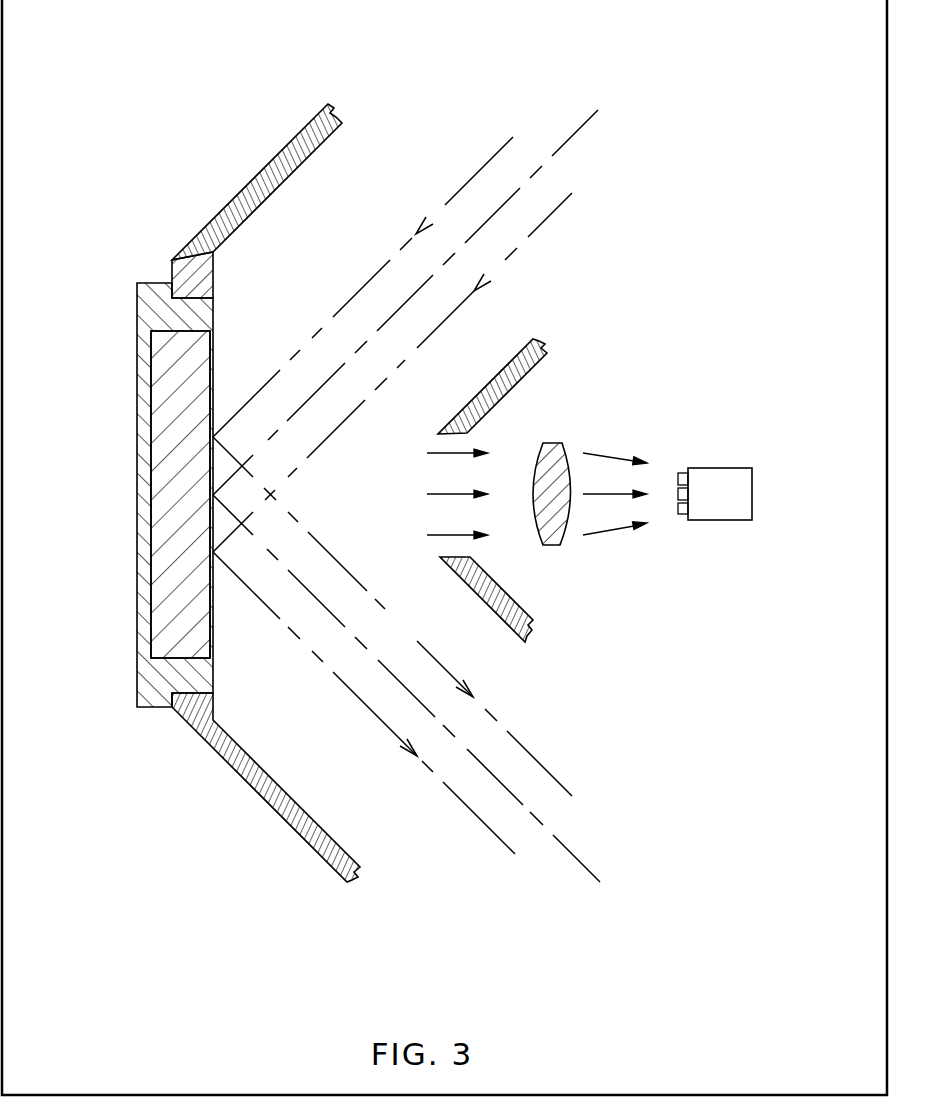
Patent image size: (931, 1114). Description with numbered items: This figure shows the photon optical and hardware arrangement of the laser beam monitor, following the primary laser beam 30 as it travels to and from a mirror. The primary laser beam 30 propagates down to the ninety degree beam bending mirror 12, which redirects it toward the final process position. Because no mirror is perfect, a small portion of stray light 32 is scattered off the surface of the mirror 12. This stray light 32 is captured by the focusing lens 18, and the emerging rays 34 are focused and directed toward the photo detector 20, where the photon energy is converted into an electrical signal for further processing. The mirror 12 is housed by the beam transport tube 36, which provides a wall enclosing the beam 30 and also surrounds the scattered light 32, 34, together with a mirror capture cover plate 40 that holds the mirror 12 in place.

The beam bending mirror 12 is at (182, 660).
The focusing lens 18 is at (555, 443).
The photo detector 20 is at (683, 517).
The primary laser beam 30 is at (487, 162).
The stray light 32 is at (483, 452).
The rays 34 is at (618, 457).
The beam transport tube 36 is at (280, 148).
The mirror capture cover plate 40 is at (153, 283).